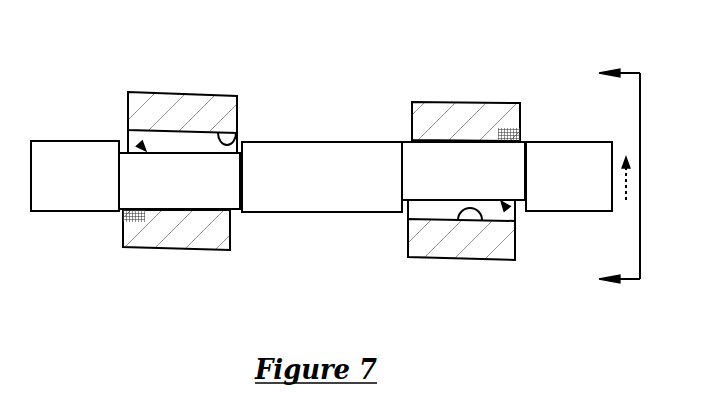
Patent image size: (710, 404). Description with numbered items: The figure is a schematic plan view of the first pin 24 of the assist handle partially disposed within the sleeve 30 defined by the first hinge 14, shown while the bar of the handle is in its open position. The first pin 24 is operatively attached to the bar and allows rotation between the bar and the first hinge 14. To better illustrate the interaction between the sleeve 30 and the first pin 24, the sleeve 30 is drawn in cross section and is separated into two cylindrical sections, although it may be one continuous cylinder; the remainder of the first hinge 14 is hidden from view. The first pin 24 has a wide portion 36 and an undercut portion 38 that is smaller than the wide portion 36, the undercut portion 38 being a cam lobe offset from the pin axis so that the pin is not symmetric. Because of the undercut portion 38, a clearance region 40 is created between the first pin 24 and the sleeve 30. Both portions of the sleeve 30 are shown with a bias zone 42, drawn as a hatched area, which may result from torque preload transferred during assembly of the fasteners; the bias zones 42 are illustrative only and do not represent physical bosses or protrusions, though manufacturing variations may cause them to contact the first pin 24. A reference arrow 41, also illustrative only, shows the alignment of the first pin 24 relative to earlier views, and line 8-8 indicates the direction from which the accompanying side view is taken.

The first hinge 14 is at (200, 240).
The first pin 24 is at (71, 197).
The sleeve 30 is at (235, 147).
The wide portion 36 is at (215, 203).
The undercut portion 38 is at (175, 154).
The clearance region 40 is at (143, 148).
The reference arrow 41 is at (630, 163).
The bias zone 42 is at (130, 223).
The line 8-8 is at (629, 280).